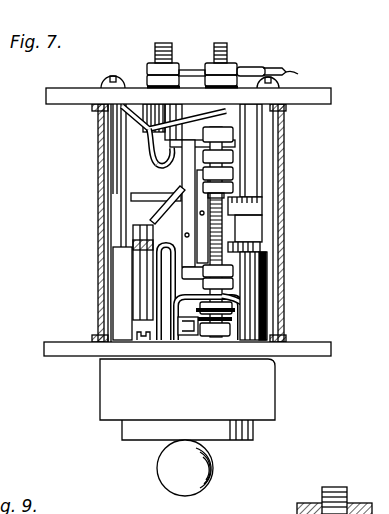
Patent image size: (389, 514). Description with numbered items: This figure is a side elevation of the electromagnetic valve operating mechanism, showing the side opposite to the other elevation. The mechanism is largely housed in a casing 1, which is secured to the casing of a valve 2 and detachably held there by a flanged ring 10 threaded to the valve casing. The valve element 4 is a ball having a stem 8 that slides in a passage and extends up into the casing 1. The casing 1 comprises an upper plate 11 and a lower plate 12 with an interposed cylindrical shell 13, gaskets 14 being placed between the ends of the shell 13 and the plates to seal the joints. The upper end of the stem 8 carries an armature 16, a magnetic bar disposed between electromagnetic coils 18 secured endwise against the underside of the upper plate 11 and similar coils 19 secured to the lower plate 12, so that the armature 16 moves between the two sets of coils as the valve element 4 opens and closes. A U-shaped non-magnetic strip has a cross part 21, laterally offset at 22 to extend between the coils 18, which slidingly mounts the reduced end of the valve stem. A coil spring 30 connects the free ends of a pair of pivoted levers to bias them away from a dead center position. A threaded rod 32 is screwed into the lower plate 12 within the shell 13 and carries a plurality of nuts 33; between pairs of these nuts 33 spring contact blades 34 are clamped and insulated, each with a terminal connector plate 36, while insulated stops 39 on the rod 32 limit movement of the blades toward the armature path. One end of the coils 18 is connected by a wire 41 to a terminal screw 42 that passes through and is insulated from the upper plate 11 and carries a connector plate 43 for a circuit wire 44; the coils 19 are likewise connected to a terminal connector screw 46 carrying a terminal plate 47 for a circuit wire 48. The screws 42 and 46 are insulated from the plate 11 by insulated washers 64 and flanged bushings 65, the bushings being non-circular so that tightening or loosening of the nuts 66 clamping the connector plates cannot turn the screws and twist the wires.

In FIG. 7, the casing 1 is at (284, 206).
In FIG. 7, the valve 2 is at (254, 437).
In FIG. 7, the valve element 4 is at (185, 468).
In FIG. 7, the stem 8 is at (195, 346).
In FIG. 7, the flanged ring 10 is at (187, 389).
In FIG. 7, the upper plate 11 is at (88, 92).
In FIG. 7, the lower plate 12 is at (310, 352).
In FIG. 7, the shell 13 is at (98, 236).
In FIG. 7, the gaskets 14 is at (95, 108).
In FIG. 7, the armature 16 is at (257, 214).
In FIG. 7, the electromagnetic coils 18 is at (150, 192).
In FIG. 7, the coils 19 is at (262, 282).
In FIG. 7, the cross part 21 is at (180, 192).
In FIG. 7, the lateral offset 22 is at (169, 216).
In FIG. 7, the coil spring 30 is at (130, 292).
In FIG. 7, the rod 32 is at (224, 234).
In FIG. 7, the nuts 33 is at (233, 155).
In FIG. 9, the nuts 33 is at (297, 508).
In FIG. 7, the spring contact blades 34 is at (186, 254).
In FIG. 7, the terminal connector plate 36 is at (160, 160).
In FIG. 9, the terminal connector plate 36 is at (350, 499).
In FIG. 7, the insulated stops 39 is at (234, 190).
In FIG. 7, the wire 41 is at (150, 146).
In FIG. 7, the terminal screw 42 is at (156, 50).
In FIG. 7, the connector plate 43 is at (180, 66).
In FIG. 7, the circuit wire 44 is at (207, 62).
In FIG. 7, the terminal connector screw 46 is at (230, 66).
In FIG. 7, the terminal plate 47 is at (262, 73).
In FIG. 7, the circuit wire 48 is at (292, 73).
In FIG. 7, the insulated washers 64 is at (148, 84).
In FIG. 7, the flanged bushings 65 is at (124, 128).
In FIG. 7, the nuts 66 is at (238, 70).